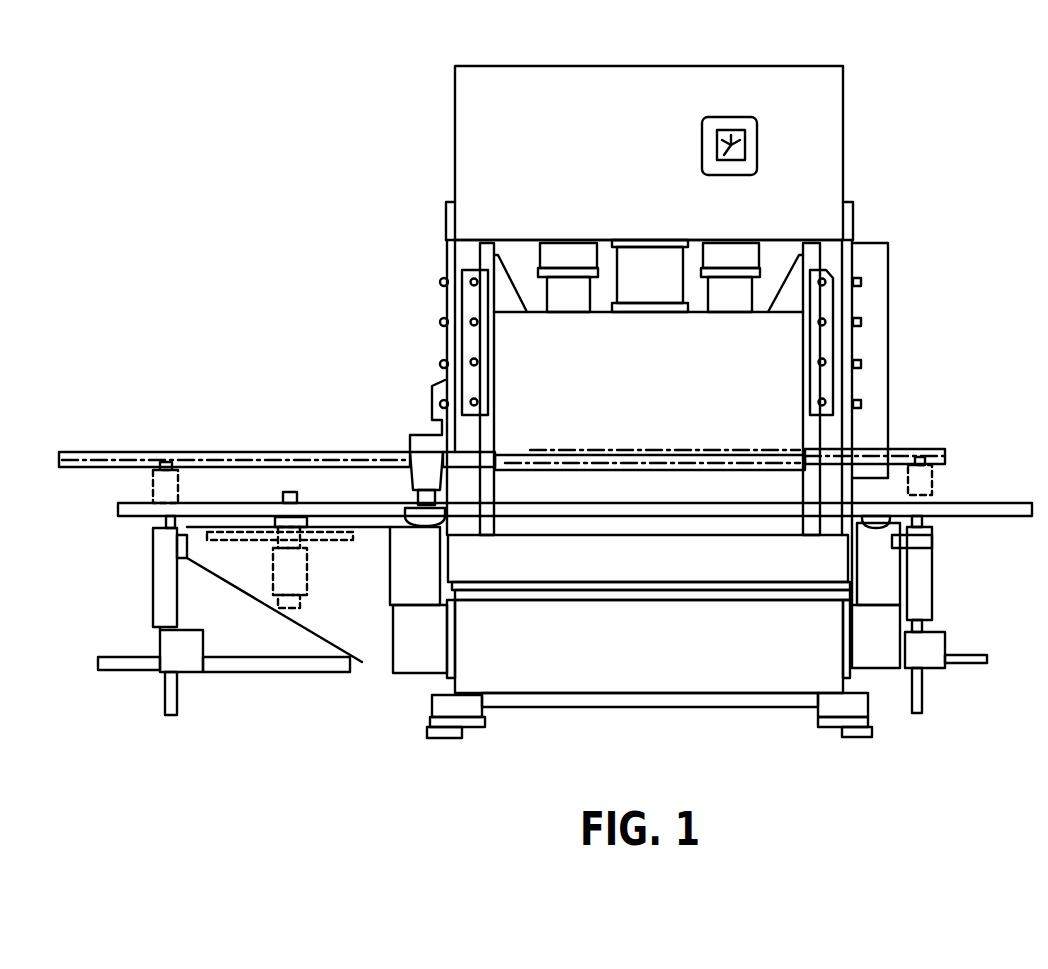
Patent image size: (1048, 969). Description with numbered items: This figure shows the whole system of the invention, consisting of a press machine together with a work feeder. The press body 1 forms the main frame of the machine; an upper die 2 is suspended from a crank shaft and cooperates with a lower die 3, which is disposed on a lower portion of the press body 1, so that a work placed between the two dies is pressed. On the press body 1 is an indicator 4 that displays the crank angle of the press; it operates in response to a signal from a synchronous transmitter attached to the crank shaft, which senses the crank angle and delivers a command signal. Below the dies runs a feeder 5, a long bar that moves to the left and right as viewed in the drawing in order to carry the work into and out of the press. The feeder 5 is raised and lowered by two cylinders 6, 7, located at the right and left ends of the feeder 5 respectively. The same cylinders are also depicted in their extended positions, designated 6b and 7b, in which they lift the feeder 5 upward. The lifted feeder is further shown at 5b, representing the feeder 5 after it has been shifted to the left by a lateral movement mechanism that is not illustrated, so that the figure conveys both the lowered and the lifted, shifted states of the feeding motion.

The press body 1 is at (820, 166).
The upper die 2 is at (783, 430).
The lower die 3 is at (788, 527).
The indicator 4 is at (745, 145).
The feeder 5 is at (1012, 503).
The feeder in left-moved position 5b is at (905, 449).
The cylinder 6 is at (932, 533).
The cylinder in extended position 6b is at (932, 480).
The cylinder 7 is at (150, 548).
The cylinder in extended position 7b is at (153, 488).